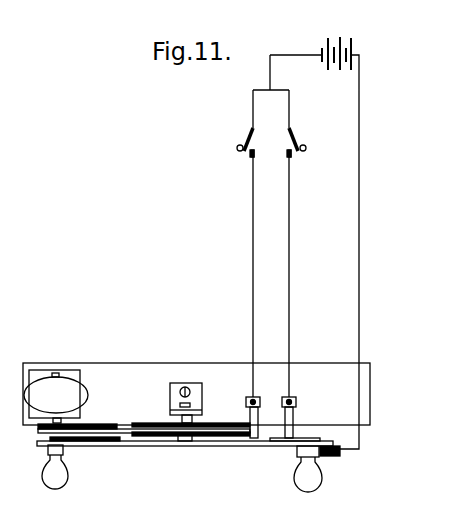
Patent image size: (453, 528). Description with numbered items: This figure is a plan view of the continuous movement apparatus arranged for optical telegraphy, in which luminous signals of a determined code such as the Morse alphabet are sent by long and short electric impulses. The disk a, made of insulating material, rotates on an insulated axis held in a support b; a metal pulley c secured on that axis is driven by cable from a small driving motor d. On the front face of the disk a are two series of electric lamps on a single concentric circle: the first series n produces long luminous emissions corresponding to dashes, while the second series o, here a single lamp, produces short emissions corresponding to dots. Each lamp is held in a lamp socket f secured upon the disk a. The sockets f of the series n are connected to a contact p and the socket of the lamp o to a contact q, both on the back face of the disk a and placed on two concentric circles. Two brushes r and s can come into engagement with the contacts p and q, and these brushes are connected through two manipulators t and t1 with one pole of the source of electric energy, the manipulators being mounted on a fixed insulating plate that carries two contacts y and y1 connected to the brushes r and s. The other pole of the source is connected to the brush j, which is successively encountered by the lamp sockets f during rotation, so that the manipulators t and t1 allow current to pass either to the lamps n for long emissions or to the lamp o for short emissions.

The manipulator t1 is at (247, 136).
The manipulator t is at (295, 136).
The contact y1 is at (251, 158).
The contact y is at (292, 157).
The driving motor d is at (68, 388).
The support b is at (192, 392).
The metal pulley c is at (118, 426).
The contact q is at (122, 441).
The disk a is at (168, 446).
The contact p is at (303, 438).
The brush s is at (253, 423).
The brush r is at (292, 417).
The lamp socket f is at (50, 450).
The second series of lamps o is at (63, 477).
The first series of lamps n is at (310, 478).
The brush j is at (330, 456).